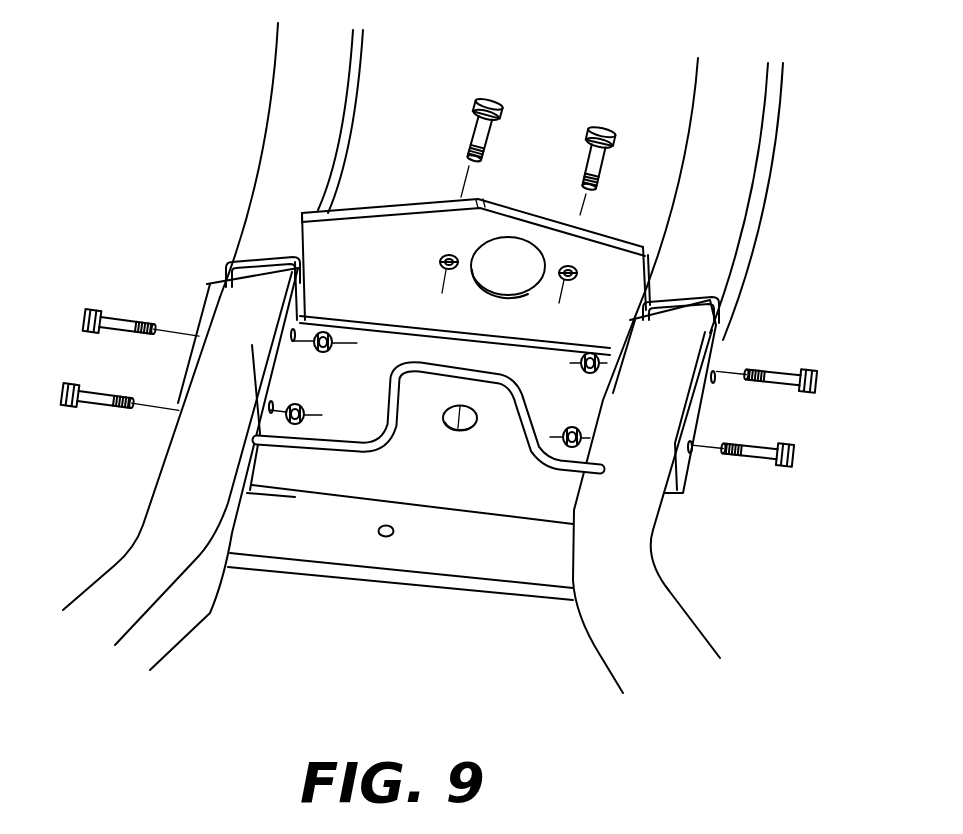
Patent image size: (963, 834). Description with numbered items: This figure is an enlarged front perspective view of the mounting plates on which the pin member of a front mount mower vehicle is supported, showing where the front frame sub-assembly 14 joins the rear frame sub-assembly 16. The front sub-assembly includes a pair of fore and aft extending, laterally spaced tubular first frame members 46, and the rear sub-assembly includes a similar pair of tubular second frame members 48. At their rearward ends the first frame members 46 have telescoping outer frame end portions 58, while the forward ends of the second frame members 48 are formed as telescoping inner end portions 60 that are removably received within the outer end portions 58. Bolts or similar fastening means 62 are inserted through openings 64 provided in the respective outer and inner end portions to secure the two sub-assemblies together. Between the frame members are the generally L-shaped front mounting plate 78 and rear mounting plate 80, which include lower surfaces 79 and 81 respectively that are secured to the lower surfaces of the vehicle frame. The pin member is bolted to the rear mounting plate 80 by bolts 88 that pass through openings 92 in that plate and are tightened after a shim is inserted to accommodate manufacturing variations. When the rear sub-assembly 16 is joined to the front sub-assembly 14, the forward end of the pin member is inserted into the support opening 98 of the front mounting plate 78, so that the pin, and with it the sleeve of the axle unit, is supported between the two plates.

The front frame sub-assembly 14 is at (221, 634).
The rear frame sub-assembly 16 is at (811, 95).
The first frame members 46 is at (156, 555).
The second frame members 48 is at (291, 115).
The telescoping outer frame end portions 58 is at (228, 337).
The telescoping inner end portions 60 is at (240, 268).
The bolts or similar fastening means 62 is at (68, 383).
The openings 64 is at (273, 408).
The front mounting plate 78 is at (383, 489).
The lower surface 79 is at (507, 597).
The rear mounting plate 80 is at (326, 276).
The lower surface 81 is at (652, 277).
The bolts 88 is at (487, 104).
The openings 92 is at (441, 270).
The support opening 98 is at (460, 431).